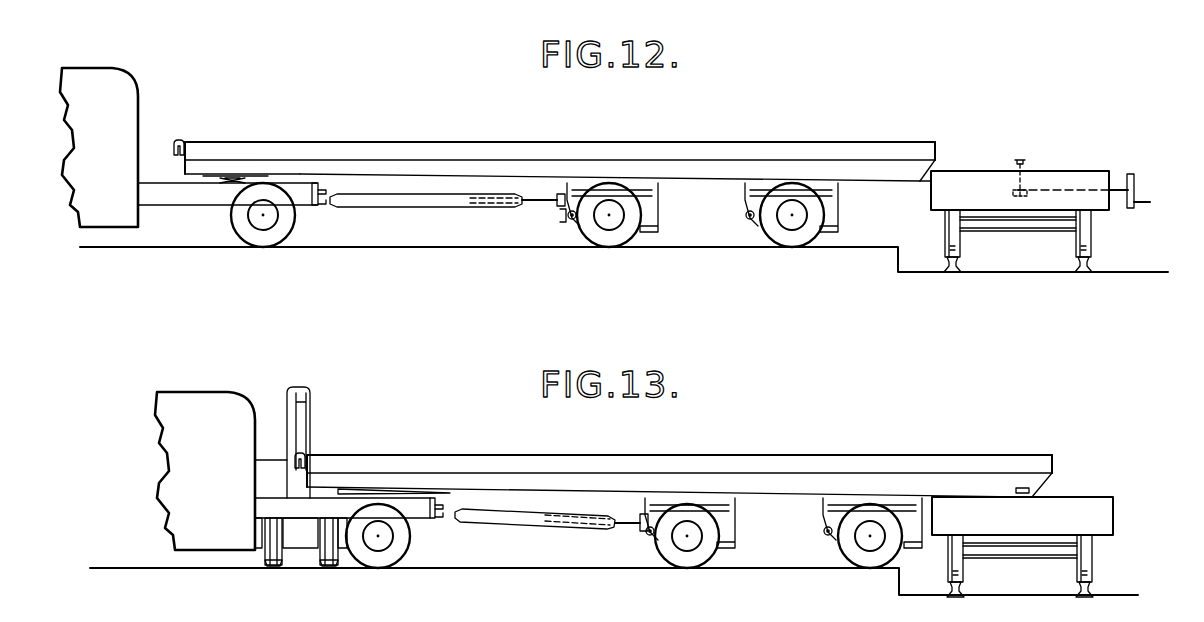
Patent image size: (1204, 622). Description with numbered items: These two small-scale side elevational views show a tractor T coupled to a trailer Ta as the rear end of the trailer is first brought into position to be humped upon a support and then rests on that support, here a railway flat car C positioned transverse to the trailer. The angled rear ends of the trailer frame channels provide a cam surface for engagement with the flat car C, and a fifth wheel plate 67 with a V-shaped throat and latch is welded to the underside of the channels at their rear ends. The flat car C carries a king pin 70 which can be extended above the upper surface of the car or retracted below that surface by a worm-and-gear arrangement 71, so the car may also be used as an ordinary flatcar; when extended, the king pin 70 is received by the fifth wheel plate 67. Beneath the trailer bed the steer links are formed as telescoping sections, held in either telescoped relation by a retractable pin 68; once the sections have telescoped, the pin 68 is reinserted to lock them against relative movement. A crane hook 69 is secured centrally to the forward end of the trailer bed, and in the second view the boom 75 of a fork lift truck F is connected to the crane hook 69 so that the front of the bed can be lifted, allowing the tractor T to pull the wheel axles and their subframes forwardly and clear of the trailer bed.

In FIG. 12, the tractor T is at (130, 80).
In FIG. 13, the tractor T is at (176, 390).
In FIG. 12, the trailer Ta is at (406, 134).
In FIG. 12, the crane hook 69 is at (177, 138).
In FIG. 13, the crane hook 69 is at (312, 455).
In FIG. 12, the retractable pin 68 is at (493, 210).
In FIG. 12, the fifth wheel plate 67 is at (903, 182).
In FIG. 13, the fifth wheel plate 67 is at (1046, 496).
In FIG. 12, the king pin 70 is at (1017, 158).
In FIG. 13, the king pin 70 is at (1022, 486).
In FIG. 12, the worm-and-gear arrangement 71 is at (1012, 200).
In FIG. 12, the flat car C is at (1048, 171).
In FIG. 13, the flat car C is at (1097, 517).
In FIG. 13, the boom 75 is at (287, 416).
In FIG. 13, the fork lift truck F is at (314, 412).